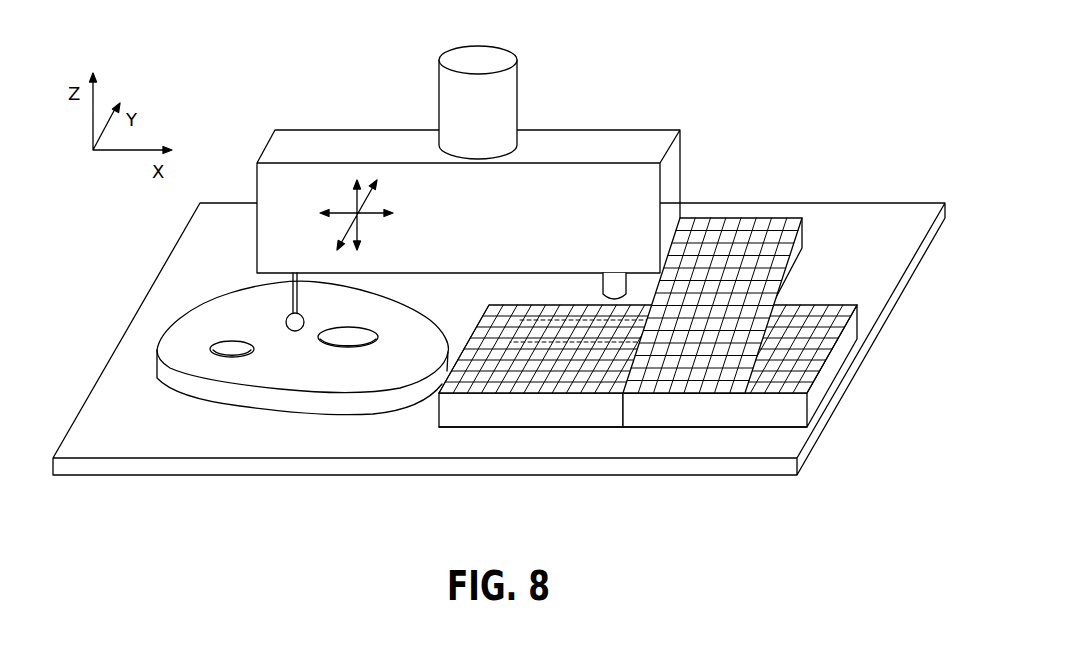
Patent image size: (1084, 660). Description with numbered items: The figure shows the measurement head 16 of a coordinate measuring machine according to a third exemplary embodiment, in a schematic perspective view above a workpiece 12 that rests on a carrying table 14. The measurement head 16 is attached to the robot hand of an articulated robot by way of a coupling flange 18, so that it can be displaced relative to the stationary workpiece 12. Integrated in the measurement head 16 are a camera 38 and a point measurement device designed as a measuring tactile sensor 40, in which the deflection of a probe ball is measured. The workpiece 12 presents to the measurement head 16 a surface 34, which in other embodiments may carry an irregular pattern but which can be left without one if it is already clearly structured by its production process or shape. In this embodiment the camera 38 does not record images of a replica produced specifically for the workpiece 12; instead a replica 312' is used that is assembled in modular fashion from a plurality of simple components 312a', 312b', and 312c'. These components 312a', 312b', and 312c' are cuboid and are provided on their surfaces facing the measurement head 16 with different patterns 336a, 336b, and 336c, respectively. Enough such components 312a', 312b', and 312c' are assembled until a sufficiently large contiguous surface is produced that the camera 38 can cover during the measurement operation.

The workpiece 12 is at (157, 350).
The carrying table 14 is at (807, 442).
The measurement head 16 is at (297, 142).
The coupling flange 18 is at (506, 96).
The surface 34 is at (203, 316).
The camera 38 is at (575, 293).
The measuring tactile sensor 40 is at (266, 308).
The pattern 336a is at (478, 330).
The pattern 336b is at (828, 313).
The pattern 336c is at (750, 227).
The component 312a' is at (528, 466).
The component 312b' is at (740, 419).
The component 312c' is at (861, 290).
The replica 312' is at (640, 493).